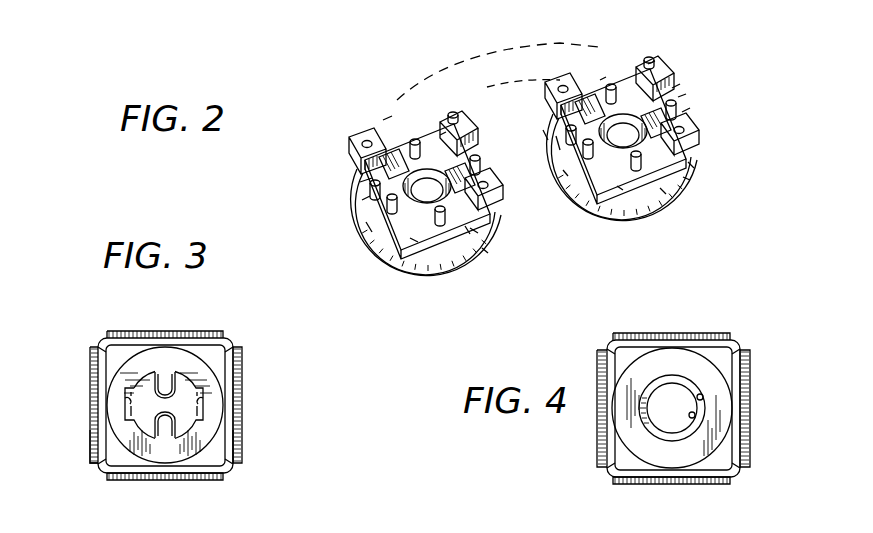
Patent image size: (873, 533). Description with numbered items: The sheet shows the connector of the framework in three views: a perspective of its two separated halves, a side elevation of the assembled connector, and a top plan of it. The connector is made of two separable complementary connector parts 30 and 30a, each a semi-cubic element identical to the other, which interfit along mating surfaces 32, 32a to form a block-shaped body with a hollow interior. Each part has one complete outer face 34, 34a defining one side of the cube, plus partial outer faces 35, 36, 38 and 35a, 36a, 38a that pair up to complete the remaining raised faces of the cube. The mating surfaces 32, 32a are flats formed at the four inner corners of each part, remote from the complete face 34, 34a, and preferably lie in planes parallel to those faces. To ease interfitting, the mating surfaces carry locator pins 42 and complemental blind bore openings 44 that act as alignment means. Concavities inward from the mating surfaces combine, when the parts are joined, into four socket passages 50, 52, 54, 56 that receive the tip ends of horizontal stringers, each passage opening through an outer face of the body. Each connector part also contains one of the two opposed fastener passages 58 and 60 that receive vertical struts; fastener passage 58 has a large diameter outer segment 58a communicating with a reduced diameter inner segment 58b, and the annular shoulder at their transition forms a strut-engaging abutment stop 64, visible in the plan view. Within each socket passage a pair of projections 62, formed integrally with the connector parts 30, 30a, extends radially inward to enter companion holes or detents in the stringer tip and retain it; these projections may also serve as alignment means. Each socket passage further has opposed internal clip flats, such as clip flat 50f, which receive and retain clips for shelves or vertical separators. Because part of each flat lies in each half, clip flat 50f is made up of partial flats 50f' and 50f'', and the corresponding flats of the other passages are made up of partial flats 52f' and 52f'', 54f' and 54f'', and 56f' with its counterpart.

In FIG. 2, the connector part 30 is at (647, 208).
In FIG. 2, the connector part 30a is at (452, 264).
In FIG. 2, the mating surface 32 is at (560, 80).
In FIG. 2, the mating surface 32a is at (361, 136).
In FIG. 3, the outer face 34 is at (207, 331).
In FIG. 4, the outer face 34 is at (706, 372).
In FIG. 3, the outer face 34a is at (192, 480).
In FIG. 2, the partial outer face 35 is at (690, 164).
In FIG. 3, the partial outer face 35 is at (203, 367).
In FIG. 2, the partial outer face 35a is at (484, 251).
In FIG. 3, the partial outer face 35a is at (203, 438).
In FIG. 2, the partial outer face 36 is at (566, 171).
In FIG. 3, the partial outer face 36 is at (241, 368).
In FIG. 3, the partial outer face 36a is at (241, 439).
In FIG. 3, the partial outer face 38 is at (90, 365).
In FIG. 2, the partial outer face 38a is at (367, 226).
In FIG. 3, the partial outer face 38a is at (91, 439).
In FIG. 2, the locator pin 42 is at (657, 62).
In FIG. 2, the blind bore opening 44 is at (700, 123).
In FIG. 2, the socket passage 50 is at (467, 229).
In FIG. 3, the socket passage 50 is at (141, 386).
In FIG. 3, the clip flat 50f is at (167, 400).
In FIG. 2, the partial clip flat 50f' is at (670, 209).
In FIG. 2, the partial clip flat 50f'' is at (468, 262).
In FIG. 2, the socket passage 52 is at (362, 199).
In FIG. 2, the partial clip flat 52f' is at (722, 89).
In FIG. 2, the partial clip flat 52f'' is at (326, 173).
In FIG. 2, the socket passage 54 is at (422, 150).
In FIG. 2, the partial clip flat 54f' is at (506, 60).
In FIG. 2, the partial clip flat 54f'' is at (456, 105).
In FIG. 2, the socket passage 56 is at (476, 153).
In FIG. 2, the partial clip flat 56f' is at (525, 113).
In FIG. 2, the fastener passage 58 is at (674, 87).
In FIG. 4, the large diameter outer segment 58a is at (704, 397).
In FIG. 4, the reduced diameter inner segment 58b is at (696, 414).
In FIG. 2, the fastener passage 60 is at (463, 118).
In FIG. 2, the projection 62 is at (412, 142).
In FIG. 3, the projection 62 is at (167, 378).
In FIG. 4, the strut-engaging abutment stop 64 is at (694, 431).